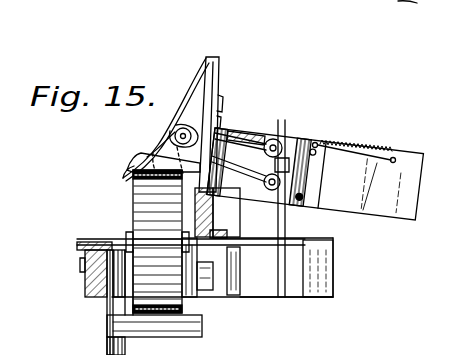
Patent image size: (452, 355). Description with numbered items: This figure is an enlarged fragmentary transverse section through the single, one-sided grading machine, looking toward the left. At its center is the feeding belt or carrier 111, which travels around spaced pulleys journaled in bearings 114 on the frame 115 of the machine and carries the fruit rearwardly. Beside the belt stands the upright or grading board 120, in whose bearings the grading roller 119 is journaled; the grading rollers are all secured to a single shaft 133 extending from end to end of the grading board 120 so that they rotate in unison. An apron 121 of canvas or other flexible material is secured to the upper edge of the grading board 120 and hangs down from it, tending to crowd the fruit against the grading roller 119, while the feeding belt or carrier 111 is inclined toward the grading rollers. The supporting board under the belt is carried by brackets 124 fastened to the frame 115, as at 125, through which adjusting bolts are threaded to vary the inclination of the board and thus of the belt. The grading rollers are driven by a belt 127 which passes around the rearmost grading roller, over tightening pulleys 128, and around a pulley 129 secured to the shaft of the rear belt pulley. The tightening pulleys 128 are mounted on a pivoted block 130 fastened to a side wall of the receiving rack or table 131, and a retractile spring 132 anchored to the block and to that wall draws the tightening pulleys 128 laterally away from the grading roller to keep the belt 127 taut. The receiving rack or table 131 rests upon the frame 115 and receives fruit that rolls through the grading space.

The feeding belt or carrier 111 is at (150, 184).
The bearings 114 is at (102, 230).
The frame 115 is at (312, 300).
The grading roller 119 is at (174, 137).
The upright or grading board 120 is at (217, 84).
The apron 121 is at (205, 61).
The brackets 124 is at (218, 200).
The fastening 125 is at (218, 228).
The belt 127 is at (251, 135).
The tightening pulleys 128 is at (264, 152).
The pulley 129 is at (290, 278).
The pivoted block 130 is at (310, 172).
The receiving rack or table 131 is at (387, 207).
The retractile spring 132 is at (357, 150).
The shaft 133 is at (160, 150).